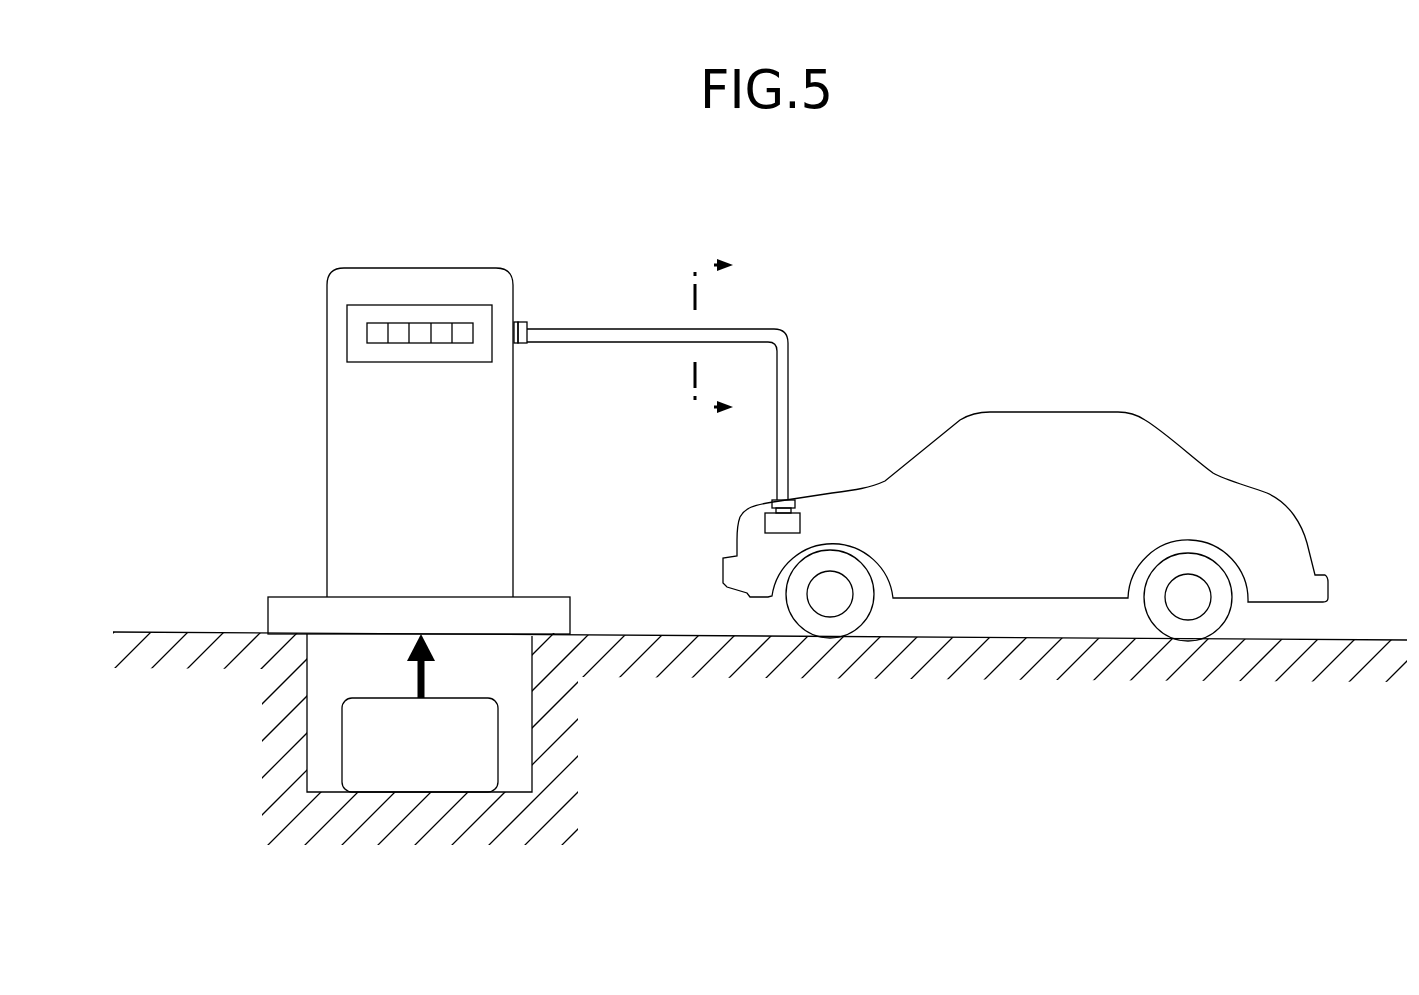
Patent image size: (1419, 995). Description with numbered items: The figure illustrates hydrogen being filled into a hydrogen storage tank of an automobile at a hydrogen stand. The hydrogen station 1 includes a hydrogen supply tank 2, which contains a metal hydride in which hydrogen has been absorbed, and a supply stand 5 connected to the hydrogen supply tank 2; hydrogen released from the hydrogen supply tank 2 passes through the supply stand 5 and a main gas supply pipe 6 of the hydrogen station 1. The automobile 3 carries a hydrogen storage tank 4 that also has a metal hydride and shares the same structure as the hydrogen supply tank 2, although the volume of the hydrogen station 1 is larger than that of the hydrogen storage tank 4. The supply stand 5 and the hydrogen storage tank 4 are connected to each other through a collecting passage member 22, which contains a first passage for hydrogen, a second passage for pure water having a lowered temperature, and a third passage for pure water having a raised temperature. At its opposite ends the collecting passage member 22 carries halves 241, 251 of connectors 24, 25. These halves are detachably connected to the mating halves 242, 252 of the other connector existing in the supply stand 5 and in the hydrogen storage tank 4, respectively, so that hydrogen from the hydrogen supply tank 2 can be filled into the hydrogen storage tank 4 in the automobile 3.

The hydrogen station 1 is at (270, 417).
The hydrogen supply tank 2 is at (335, 697).
The automobile 3 is at (1133, 398).
The hydrogen storage tank 4 is at (764, 544).
The supply stand 5 is at (415, 280).
The main gas supply pipe 6 is at (694, 341).
The collecting passage member 22 is at (768, 316).
The connector 24 is at (573, 329).
The half of connector 241 is at (527, 322).
The half of connector 242 is at (518, 345).
The connector 25 is at (781, 489).
The half of connector 251 is at (795, 503).
The half of connector 252 is at (798, 510).